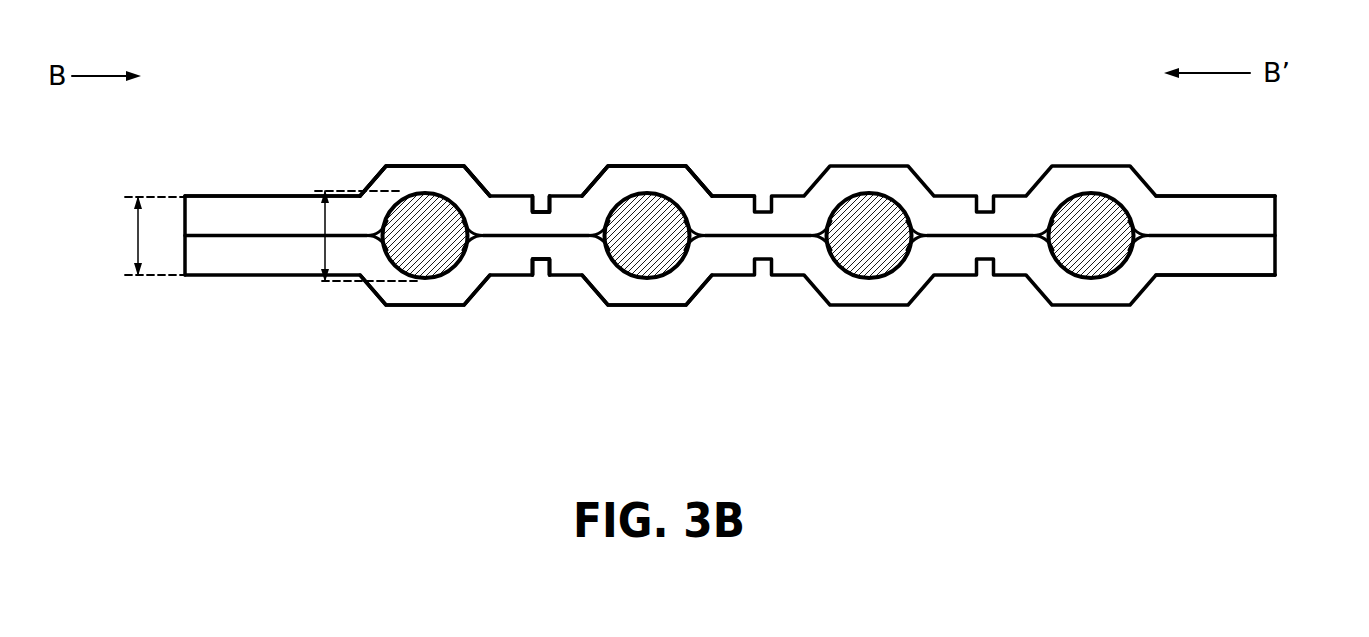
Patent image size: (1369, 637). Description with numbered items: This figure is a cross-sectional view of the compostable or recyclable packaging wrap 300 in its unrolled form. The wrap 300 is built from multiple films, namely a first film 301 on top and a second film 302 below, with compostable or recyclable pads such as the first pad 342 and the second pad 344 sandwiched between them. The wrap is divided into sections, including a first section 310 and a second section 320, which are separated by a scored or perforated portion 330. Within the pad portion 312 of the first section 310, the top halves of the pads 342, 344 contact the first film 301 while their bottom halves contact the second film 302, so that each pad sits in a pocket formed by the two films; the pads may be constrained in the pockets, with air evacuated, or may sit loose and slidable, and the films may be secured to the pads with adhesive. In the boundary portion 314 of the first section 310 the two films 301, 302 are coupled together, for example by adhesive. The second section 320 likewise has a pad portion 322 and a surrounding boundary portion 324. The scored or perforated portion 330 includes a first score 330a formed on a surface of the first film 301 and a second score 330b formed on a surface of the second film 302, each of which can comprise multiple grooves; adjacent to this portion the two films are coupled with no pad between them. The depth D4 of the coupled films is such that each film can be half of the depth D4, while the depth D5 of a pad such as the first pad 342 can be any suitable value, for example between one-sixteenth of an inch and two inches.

The compostable or recyclable packaging wrap 300 is at (243, 98).
The first film 301 is at (1275, 213).
The second film 302 is at (1275, 257).
The first section 310 is at (463, 73).
The pad portion 312 is at (420, 167).
The boundary portion 314 is at (268, 195).
The second section 320 is at (770, 77).
The pad portion 322 is at (658, 166).
The boundary portion 324 is at (727, 196).
The scored or perforated portion 330 is at (593, 118).
The first score 330a is at (536, 196).
The second score 330b is at (556, 266).
The first pad 342 is at (437, 250).
The second pad 344 is at (650, 258).
The depth D4 is at (141, 236).
The depth D5 is at (325, 245).